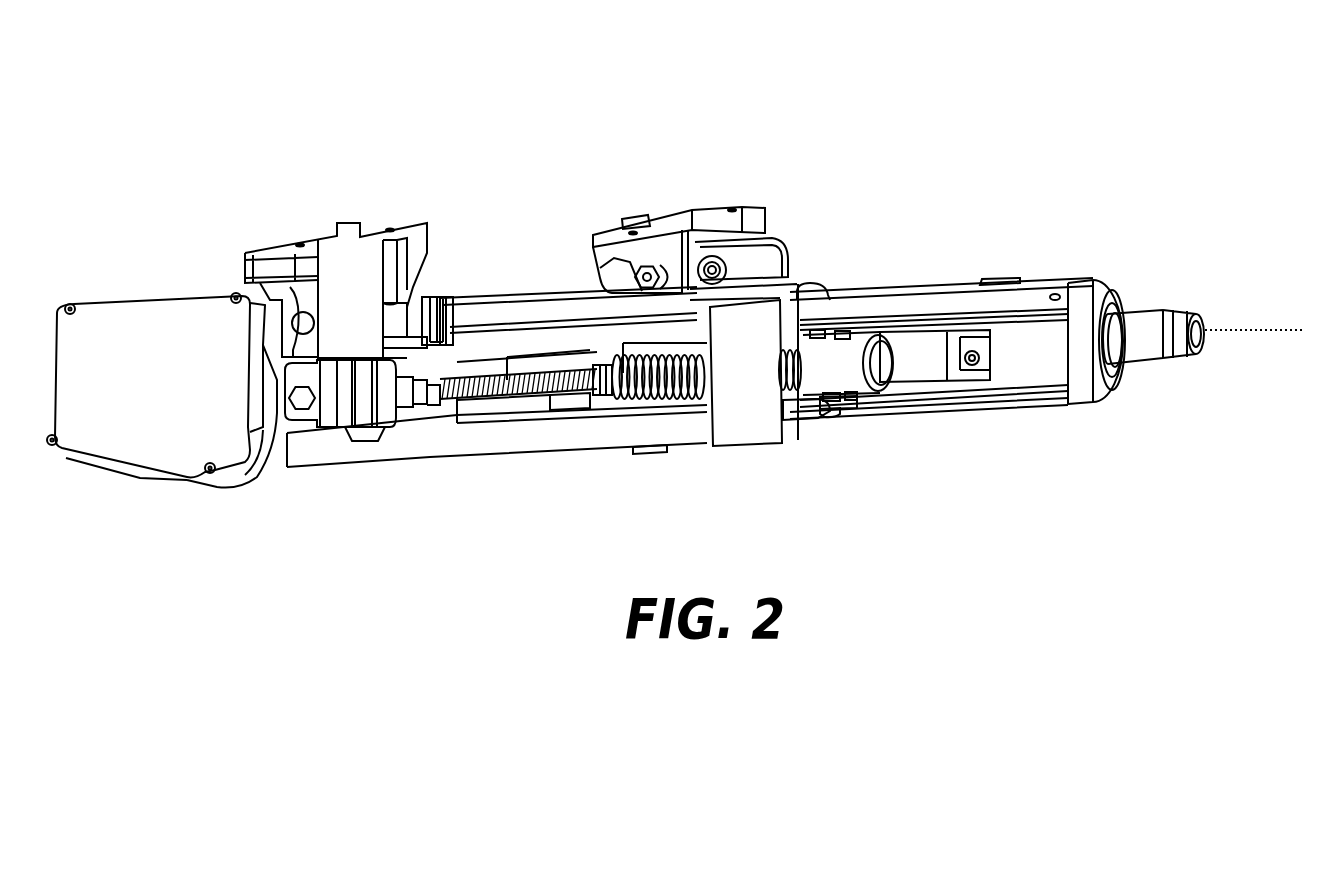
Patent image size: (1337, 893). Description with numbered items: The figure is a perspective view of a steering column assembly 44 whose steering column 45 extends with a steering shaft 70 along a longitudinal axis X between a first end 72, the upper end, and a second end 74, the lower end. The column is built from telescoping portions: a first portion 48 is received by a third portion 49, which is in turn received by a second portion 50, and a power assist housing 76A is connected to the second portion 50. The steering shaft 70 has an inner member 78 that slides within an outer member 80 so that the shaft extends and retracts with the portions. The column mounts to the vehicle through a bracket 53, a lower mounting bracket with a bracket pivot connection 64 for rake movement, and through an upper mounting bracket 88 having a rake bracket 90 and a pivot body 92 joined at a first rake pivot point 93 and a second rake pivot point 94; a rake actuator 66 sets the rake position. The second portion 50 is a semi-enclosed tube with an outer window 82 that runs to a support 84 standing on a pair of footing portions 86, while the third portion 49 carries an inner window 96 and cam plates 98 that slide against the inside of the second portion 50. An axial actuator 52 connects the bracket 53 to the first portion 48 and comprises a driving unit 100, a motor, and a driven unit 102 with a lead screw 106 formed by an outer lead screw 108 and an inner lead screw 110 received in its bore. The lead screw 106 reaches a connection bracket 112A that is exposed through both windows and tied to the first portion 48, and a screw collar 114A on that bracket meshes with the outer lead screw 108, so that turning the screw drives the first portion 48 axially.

The steering column assembly 44 is at (1138, 122).
The steering column 45 is at (1240, 282).
The first portion 48 is at (1017, 364).
The third portion 49 is at (928, 416).
The second portion 50 is at (378, 466).
The axial actuator 52 is at (355, 212).
The bracket 53 is at (428, 228).
The bracket pivot connection 64 is at (295, 262).
The rake actuator 66 is at (628, 215).
The steering shaft 70 is at (1140, 308).
The first end 72 is at (1200, 320).
The second end 74 is at (283, 472).
The power assist housing 76A is at (120, 345).
The inner member 78 is at (475, 370).
The outer member 80 is at (583, 355).
The outer window 82 is at (527, 350).
The support 84 is at (728, 376).
The footing portions 86 is at (797, 434).
The upper mounting bracket 88 is at (772, 163).
The rake bracket 90 is at (680, 232).
The pivot body 92 is at (728, 242).
The first rake pivot point 93 is at (648, 263).
The second rake pivot point 94 is at (733, 262).
The inner window 96 is at (1022, 328).
The cam plates 98 is at (1070, 290).
The driving unit 100 is at (348, 252).
The driven unit 102 is at (546, 441).
The lead screw 106 is at (578, 397).
The outer lead screw 108 is at (628, 395).
The inner lead screw 110 is at (462, 412).
The connection bracket 112A is at (905, 350).
The screw collar 114A is at (838, 422).